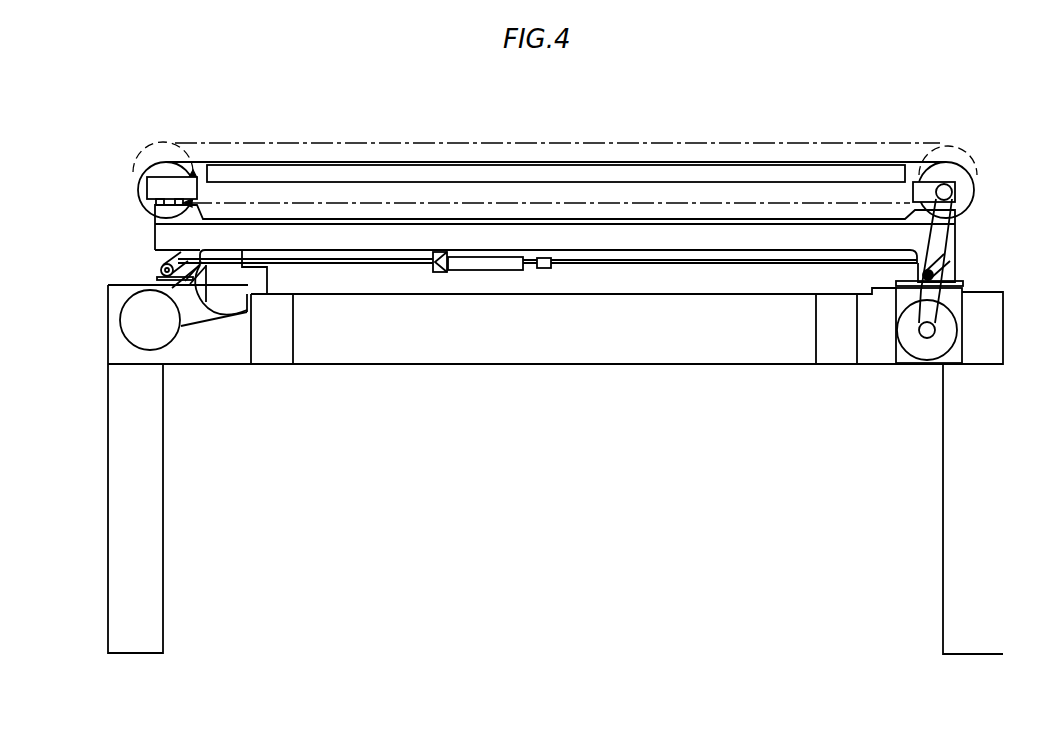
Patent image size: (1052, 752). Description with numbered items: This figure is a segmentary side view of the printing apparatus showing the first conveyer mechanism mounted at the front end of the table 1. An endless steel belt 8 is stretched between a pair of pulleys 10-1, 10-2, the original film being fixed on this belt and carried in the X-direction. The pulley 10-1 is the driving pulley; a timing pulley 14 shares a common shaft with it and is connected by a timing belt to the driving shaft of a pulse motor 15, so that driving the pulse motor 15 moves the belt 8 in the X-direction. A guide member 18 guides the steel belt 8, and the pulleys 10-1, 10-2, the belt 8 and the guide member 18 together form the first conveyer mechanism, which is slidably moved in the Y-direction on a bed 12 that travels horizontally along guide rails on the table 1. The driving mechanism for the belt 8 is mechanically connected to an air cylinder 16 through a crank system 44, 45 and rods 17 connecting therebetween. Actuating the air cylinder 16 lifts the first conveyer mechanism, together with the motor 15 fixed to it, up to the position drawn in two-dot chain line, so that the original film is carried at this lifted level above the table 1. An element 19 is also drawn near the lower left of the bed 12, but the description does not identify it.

The table 1 is at (340, 172).
The endless steel belt 8 is at (247, 160).
The driving pulley 10-1 is at (955, 172).
The pulley 10-2 is at (153, 172).
The bed 12 is at (163, 245).
The timing pulley 14 is at (955, 190).
The pulse motor 15 is at (945, 322).
The air cylinder 16 is at (473, 266).
The rods 17 is at (362, 265).
The guide member 18 is at (160, 188).
The motor 19 is at (143, 312).
The crank system 44 is at (950, 258).
The crank system 45 is at (168, 264).